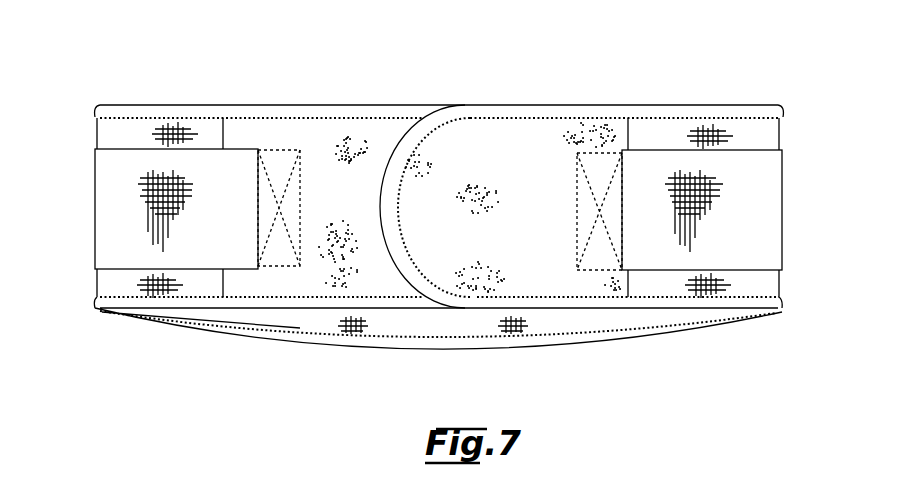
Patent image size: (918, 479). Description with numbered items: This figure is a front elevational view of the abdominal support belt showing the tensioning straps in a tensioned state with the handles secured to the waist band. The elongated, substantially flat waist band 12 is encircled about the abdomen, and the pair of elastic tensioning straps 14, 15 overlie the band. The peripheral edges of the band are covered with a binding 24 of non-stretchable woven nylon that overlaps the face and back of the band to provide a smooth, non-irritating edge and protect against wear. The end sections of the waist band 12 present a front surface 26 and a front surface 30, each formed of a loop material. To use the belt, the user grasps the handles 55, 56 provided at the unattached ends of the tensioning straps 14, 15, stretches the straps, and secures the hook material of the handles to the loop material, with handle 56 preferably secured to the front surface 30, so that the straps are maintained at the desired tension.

The waist band 12 is at (166, 132).
The tensioning strap 14 is at (112, 203).
The tensioning strap 15 is at (768, 213).
The binding 24 is at (602, 113).
The front surface 26 is at (345, 137).
The front surface 30 is at (500, 152).
The handle 55 is at (300, 207).
The handle 56 is at (577, 207).